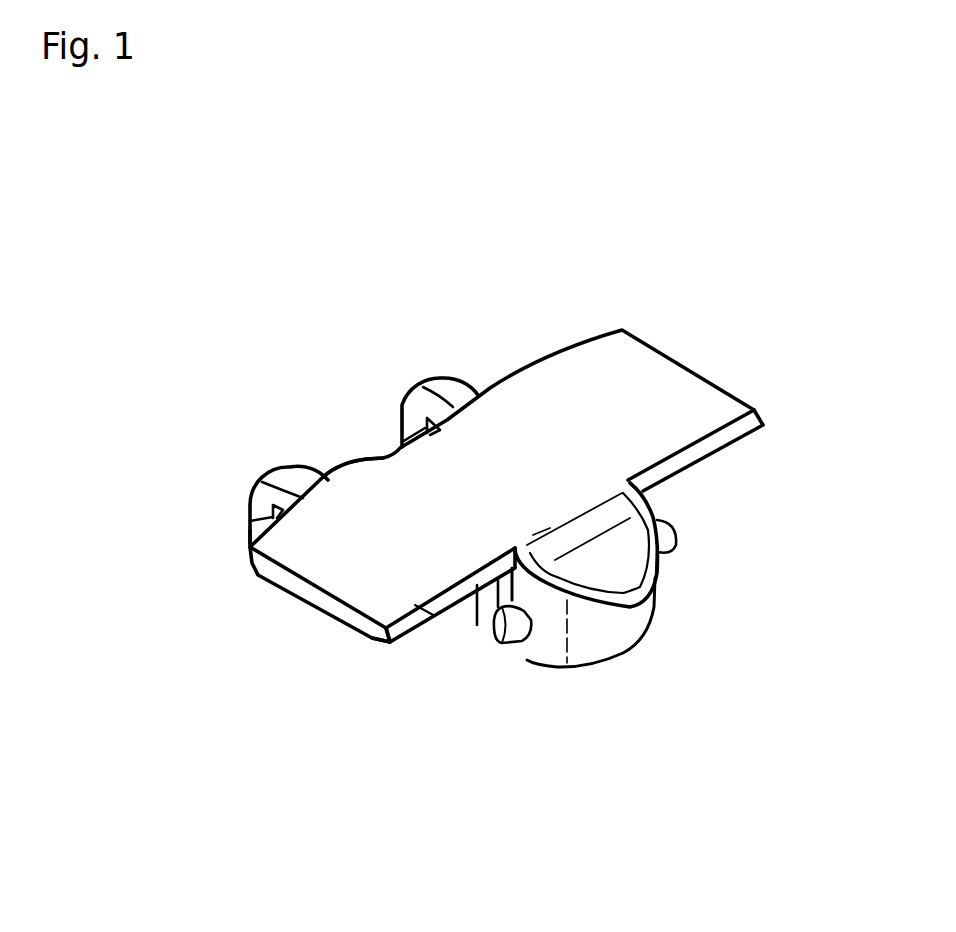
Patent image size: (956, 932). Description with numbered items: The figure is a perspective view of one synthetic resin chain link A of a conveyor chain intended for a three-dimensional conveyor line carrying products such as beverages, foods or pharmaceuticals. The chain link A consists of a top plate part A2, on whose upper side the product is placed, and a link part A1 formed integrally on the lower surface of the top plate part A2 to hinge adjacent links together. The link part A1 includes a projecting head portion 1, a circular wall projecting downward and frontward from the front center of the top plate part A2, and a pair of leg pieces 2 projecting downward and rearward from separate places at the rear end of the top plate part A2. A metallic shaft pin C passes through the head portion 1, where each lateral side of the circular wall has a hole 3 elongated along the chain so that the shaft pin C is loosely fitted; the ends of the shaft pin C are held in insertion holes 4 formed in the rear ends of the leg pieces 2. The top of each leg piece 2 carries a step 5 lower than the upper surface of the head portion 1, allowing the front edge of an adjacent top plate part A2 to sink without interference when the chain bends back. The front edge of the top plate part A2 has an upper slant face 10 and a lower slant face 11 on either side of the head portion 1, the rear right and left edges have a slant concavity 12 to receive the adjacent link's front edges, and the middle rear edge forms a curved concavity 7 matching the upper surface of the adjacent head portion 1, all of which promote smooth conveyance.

The projecting head portion 1 is at (603, 643).
The leg pieces 2 is at (277, 473).
The elongated hole 3 is at (515, 643).
The insertion hole 4 is at (255, 521).
The step 5 is at (305, 485).
The curved concavity 7 is at (383, 457).
The upper slant face 10 is at (427, 610).
The lower slant face 11 is at (385, 645).
The slant concavity 12 is at (258, 570).
The chain link A is at (650, 505).
The link part A1 is at (478, 625).
The top plate part A2 is at (670, 395).
The shaft pin C is at (493, 647).